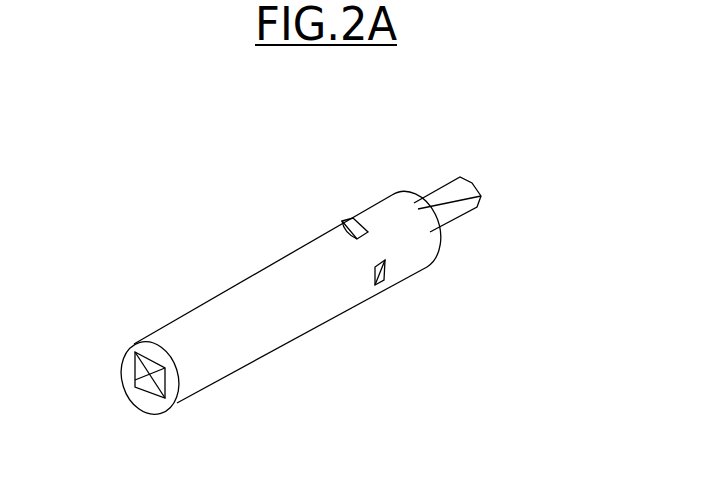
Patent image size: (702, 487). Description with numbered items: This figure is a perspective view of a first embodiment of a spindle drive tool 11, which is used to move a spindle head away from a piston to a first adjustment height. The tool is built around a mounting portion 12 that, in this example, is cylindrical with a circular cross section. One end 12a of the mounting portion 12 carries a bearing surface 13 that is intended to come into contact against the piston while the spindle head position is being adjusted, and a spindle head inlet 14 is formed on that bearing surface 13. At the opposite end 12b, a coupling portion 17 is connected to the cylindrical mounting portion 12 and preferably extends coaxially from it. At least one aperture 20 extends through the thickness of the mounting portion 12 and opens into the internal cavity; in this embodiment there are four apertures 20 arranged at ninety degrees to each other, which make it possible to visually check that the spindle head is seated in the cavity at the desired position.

The spindle drive tool 11 is at (125, 212).
The mounting portion 12 is at (246, 270).
The end 12a is at (146, 340).
The end 12b is at (393, 202).
The bearing surface 13 is at (151, 404).
The spindle head inlet 14 is at (137, 380).
The coupling portion 17 is at (459, 228).
The aperture 20 is at (344, 216).